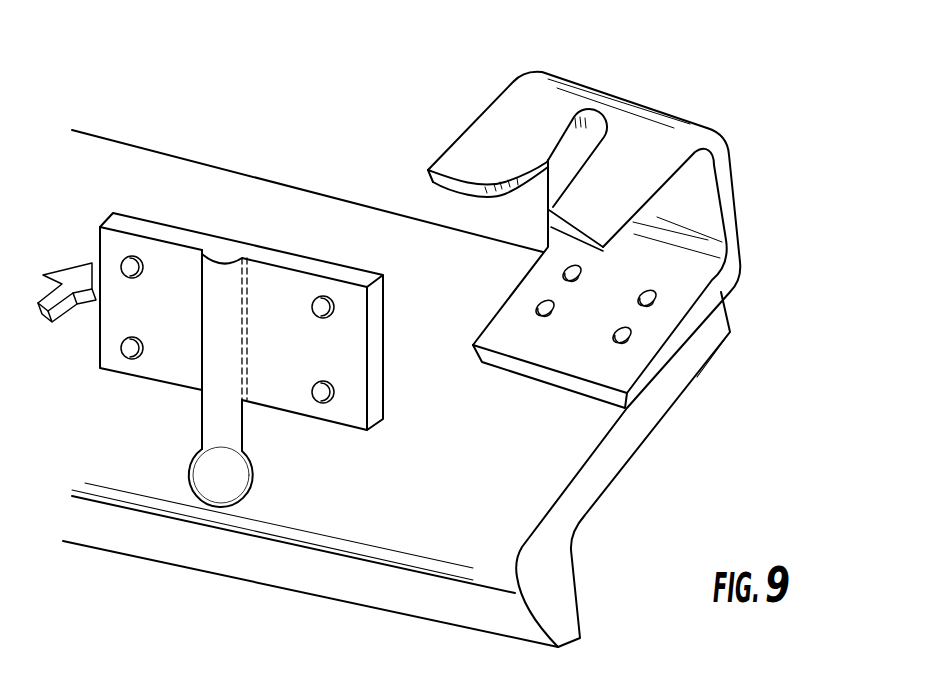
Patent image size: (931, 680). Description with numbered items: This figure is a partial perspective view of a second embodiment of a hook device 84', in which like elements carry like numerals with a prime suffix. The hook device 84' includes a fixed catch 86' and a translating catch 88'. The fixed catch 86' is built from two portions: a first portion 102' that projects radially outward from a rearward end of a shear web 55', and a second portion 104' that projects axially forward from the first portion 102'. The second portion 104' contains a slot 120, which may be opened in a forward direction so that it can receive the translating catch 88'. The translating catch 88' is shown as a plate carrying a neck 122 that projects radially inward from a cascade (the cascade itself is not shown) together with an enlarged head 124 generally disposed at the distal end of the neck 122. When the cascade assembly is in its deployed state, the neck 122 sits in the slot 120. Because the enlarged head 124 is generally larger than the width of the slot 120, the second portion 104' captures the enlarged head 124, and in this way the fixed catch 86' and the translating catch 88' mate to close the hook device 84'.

The shear web 55' is at (437, 388).
The hook device 84' is at (645, 218).
The fixed catch 86' is at (730, 271).
The translating catch 88' is at (217, 356).
The first portion 102' is at (764, 186).
The second portion 104' is at (567, 129).
The slot 120 is at (530, 192).
The neck 122 is at (202, 413).
The enlarged head 124 is at (240, 475).